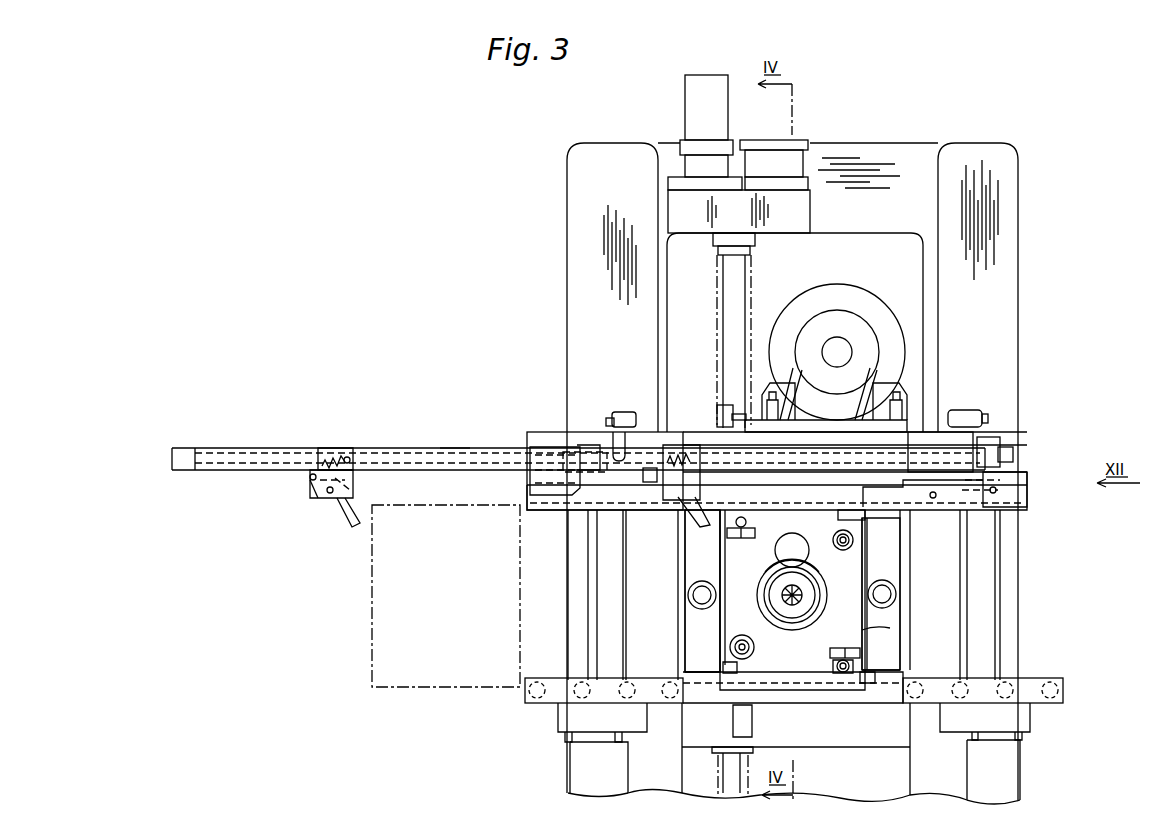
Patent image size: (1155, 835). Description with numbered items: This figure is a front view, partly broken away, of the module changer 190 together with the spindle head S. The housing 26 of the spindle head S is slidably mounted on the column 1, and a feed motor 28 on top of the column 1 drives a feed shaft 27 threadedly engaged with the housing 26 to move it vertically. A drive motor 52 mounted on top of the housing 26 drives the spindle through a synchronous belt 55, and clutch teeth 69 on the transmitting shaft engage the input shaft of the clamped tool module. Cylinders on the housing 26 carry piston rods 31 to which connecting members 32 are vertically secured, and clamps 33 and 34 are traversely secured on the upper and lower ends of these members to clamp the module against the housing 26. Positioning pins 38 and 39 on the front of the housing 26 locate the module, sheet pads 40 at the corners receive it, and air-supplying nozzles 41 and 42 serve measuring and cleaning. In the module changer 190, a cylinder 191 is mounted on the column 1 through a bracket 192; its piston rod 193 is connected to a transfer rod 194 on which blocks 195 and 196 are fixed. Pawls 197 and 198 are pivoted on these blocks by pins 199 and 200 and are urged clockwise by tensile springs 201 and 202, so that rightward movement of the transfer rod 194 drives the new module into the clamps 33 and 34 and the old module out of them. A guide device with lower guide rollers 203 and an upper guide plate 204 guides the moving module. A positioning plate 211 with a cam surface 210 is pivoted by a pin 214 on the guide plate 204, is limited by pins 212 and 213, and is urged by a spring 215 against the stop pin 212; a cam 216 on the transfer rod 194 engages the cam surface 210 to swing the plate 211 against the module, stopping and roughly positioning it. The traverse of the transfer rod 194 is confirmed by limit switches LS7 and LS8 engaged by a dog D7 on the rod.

The column 1 is at (1012, 252).
The feed motor 28 is at (722, 118).
The feed shaft 27 is at (742, 292).
The drive motor 52 is at (855, 300).
The synchronous belt 55 is at (862, 388).
The limit switch LS8 is at (963, 413).
The module changer 190 is at (545, 432).
The cam 216 is at (523, 495).
The piston rod 193 is at (407, 453).
The transfer rod 194 is at (452, 447).
The block 195 is at (325, 448).
The tensile spring 201 is at (340, 457).
The pin 199 is at (325, 497).
The pawl 197 is at (353, 517).
The dog D7 is at (618, 413).
The limit switch LS7 is at (632, 415).
The block 196 is at (682, 432).
The tensile spring 202 is at (700, 432).
The pin 200 is at (697, 515).
The pawl 198 is at (690, 515).
The clamp 33 is at (717, 513).
The upper guide plate 204 is at (547, 505).
The cylinder 191 is at (975, 440).
The bracket 192 is at (988, 443).
The spring 215 is at (1013, 470).
The pin 213 is at (1027, 482).
The cam surface 210 is at (890, 485).
The pin 214 is at (932, 498).
The positioning plate 211 is at (968, 508).
The stop pin 212 is at (968, 507).
The connecting member 32 is at (690, 570).
The piston rod 31 is at (702, 597).
The positioning pin 38 is at (728, 570).
The clutch teeth 69 is at (806, 595).
The air-supplying nozzle 41 is at (843, 550).
The air-supplying nozzle 42 is at (755, 647).
The sheet pad 40 is at (742, 532).
The lower guide roller 203 is at (537, 695).
The clamp 34 is at (700, 692).
The housing 26 is at (838, 748).
The positioning pin 39 is at (877, 680).
The spindle head S is at (895, 630).